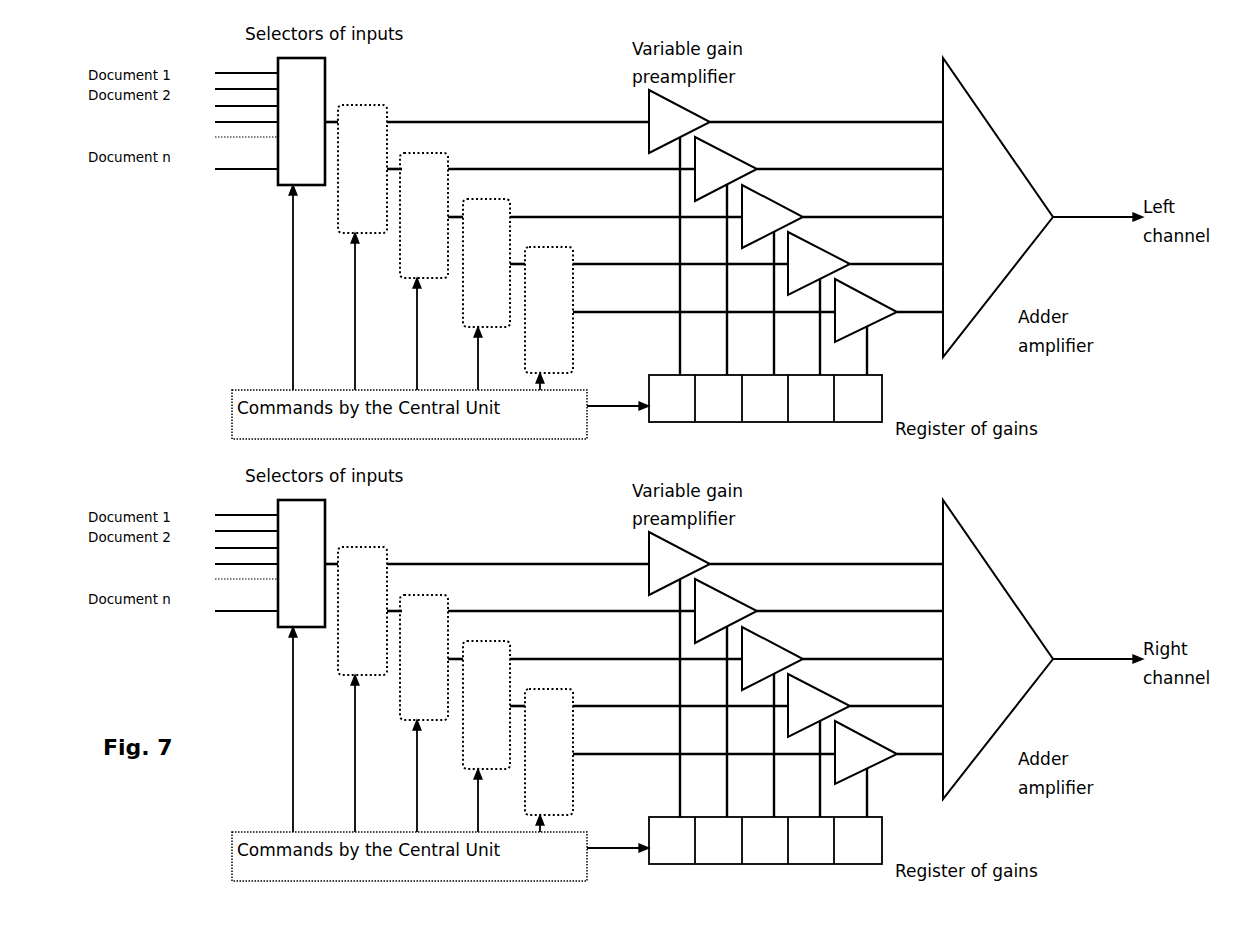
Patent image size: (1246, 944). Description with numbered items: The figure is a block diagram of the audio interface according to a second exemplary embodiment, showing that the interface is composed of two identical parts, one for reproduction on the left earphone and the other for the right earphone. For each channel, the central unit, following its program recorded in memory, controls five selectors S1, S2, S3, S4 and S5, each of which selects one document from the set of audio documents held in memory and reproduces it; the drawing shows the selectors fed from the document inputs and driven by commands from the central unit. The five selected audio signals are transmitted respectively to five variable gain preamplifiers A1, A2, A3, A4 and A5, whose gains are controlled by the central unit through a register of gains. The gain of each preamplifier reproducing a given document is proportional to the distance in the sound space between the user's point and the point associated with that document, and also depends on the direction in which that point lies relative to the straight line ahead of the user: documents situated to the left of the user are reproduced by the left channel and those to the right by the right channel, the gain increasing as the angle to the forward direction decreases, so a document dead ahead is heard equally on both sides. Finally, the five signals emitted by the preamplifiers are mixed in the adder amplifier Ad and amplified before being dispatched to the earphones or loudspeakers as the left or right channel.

The selector S1 is at (291, 445).
The selector S2 is at (346, 468).
The selector S3 is at (409, 492).
The selector S4 is at (470, 515).
The selector S5 is at (531, 539).
The preamplifier A1 is at (663, 343).
The preamplifier A2 is at (728, 387).
The preamplifier A3 is at (775, 434).
The preamplifier A4 is at (821, 482).
The preamplifier A5 is at (868, 529).
The adder amplifier Ad is at (1007, 428).